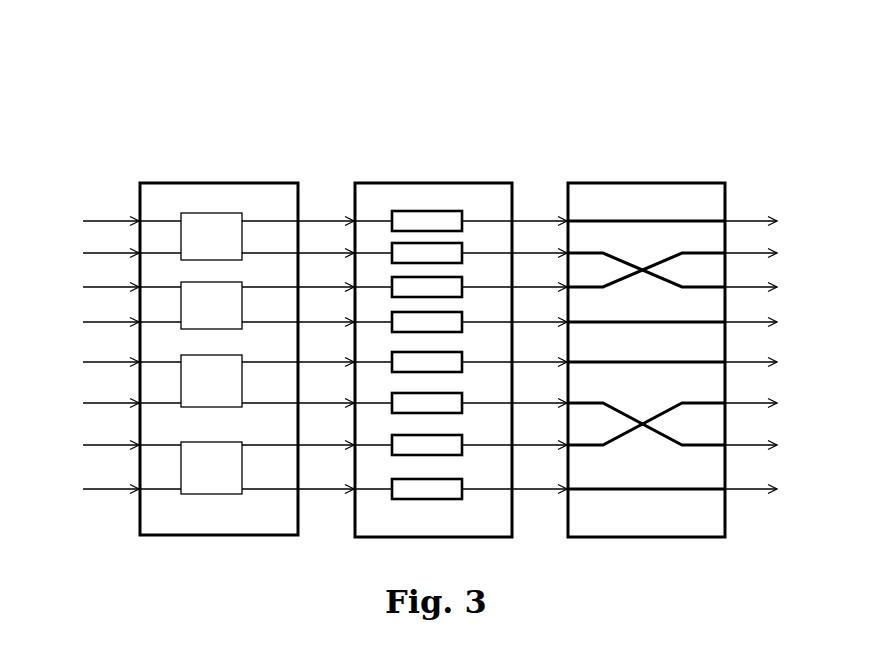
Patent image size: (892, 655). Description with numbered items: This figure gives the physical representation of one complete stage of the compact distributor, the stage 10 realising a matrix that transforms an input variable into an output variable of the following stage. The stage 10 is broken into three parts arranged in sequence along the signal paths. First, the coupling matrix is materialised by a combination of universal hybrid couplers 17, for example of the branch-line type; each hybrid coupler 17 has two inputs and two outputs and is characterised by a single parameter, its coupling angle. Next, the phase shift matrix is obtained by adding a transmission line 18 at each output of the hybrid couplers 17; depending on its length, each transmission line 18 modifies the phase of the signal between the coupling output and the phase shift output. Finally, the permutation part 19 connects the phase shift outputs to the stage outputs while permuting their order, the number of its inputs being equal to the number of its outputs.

The round transformation stage of the cipher 10 is at (394, 139).
The hybrid coupler 17 is at (215, 198).
The transmission line 18 is at (415, 198).
The permutation / swapping layer 19 is at (623, 203).